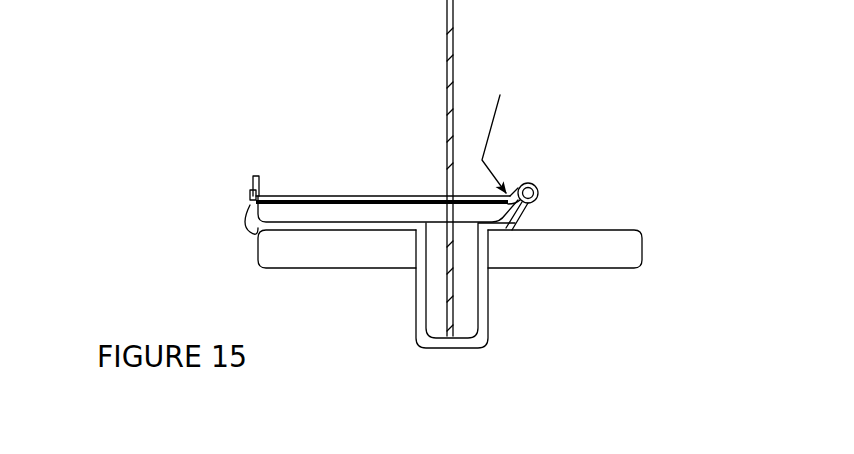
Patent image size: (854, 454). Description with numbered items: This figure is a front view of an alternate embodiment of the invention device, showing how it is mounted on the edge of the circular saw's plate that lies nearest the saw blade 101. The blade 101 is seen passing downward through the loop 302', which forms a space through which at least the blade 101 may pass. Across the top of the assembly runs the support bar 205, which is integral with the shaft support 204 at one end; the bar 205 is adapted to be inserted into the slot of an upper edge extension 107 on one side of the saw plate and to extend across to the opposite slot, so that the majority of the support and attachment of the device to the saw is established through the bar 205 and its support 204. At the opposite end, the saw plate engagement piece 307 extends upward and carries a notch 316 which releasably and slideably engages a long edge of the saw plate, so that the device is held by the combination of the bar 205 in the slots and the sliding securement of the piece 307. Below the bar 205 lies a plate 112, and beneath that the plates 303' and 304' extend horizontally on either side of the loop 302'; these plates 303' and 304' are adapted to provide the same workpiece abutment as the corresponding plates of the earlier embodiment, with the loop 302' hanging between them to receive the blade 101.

The saw blade 101 is at (447, 116).
The upper edge extension 107 is at (178, 247).
The plate 112 is at (317, 217).
The support bar 205 is at (374, 194).
The shaft support 204 is at (541, 186).
The saw plate engagement piece 307 is at (252, 180).
The notch 316 is at (249, 195).
The plate 303' is at (450, 276).
The plate 304' is at (315, 300).
The loop 302' is at (413, 321).